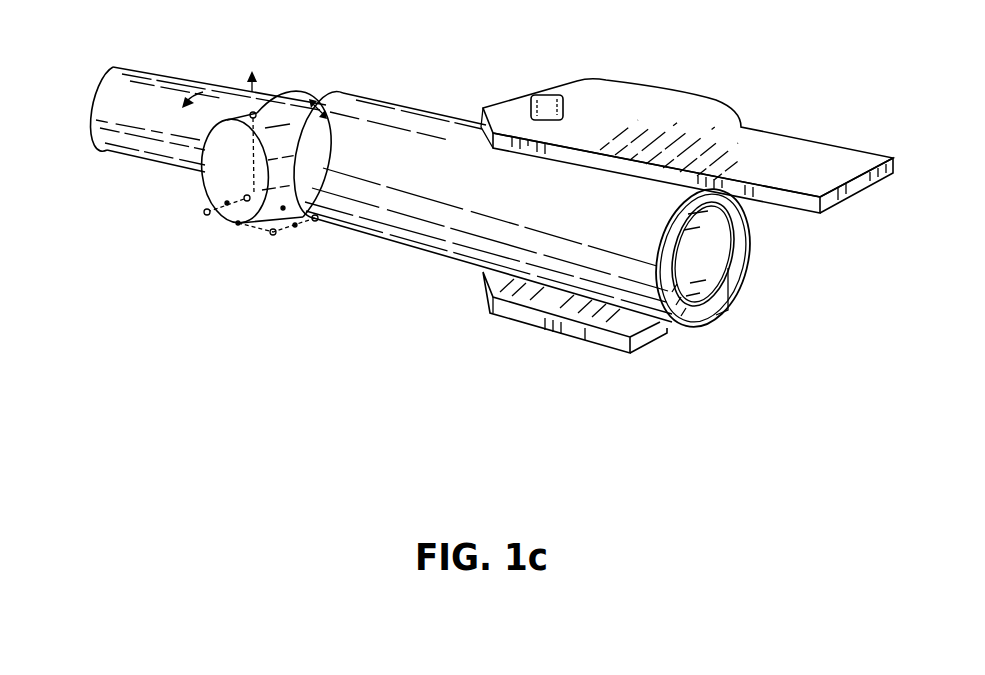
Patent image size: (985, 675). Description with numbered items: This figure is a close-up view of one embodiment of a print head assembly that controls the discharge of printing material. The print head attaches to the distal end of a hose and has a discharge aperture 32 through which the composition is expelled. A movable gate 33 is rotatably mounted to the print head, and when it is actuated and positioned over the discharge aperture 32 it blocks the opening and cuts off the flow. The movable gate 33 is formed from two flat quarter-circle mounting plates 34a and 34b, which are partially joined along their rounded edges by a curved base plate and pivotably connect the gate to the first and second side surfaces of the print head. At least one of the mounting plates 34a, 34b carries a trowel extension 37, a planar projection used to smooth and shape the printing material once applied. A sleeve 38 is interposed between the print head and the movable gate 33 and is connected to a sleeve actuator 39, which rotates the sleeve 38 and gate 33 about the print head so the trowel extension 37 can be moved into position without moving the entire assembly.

The discharge aperture 32 is at (697, 247).
The movable gate 33 is at (727, 121).
The first mounting plate 34a is at (623, 112).
The second mounting plate 34b is at (630, 353).
The trowel extension 37 is at (893, 160).
The sleeve 38 is at (404, 117).
The sleeve actuator 39 is at (280, 118).